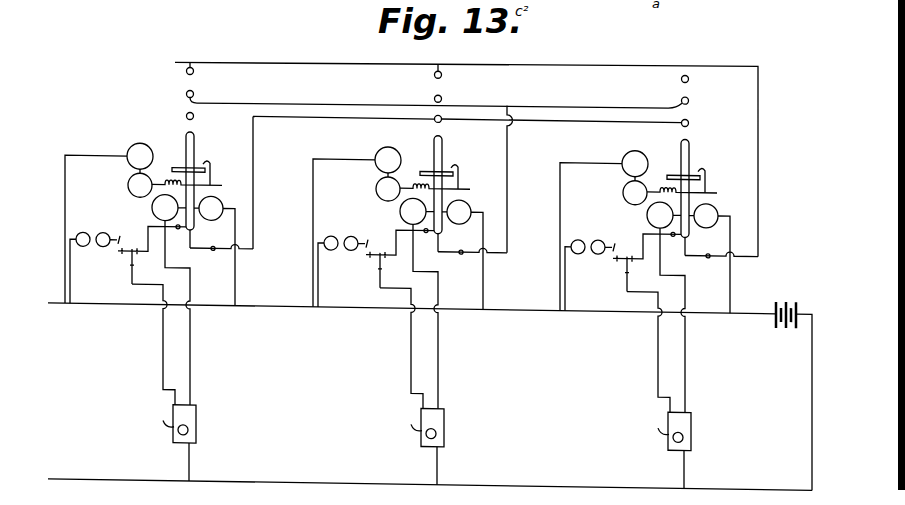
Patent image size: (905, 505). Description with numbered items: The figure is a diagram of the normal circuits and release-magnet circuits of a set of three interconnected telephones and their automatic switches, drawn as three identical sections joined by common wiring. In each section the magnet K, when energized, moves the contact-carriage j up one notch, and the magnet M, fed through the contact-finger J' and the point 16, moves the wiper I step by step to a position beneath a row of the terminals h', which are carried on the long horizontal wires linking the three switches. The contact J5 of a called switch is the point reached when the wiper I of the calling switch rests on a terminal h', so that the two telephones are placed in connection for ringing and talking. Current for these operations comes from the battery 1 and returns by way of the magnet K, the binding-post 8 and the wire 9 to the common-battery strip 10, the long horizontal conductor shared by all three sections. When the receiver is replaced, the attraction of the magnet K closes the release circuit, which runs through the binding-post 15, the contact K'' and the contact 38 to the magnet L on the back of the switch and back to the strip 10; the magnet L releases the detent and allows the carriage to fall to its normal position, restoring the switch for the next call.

The terminals h' is at (451, 99).
The wiper I is at (197, 144).
The contact-finger J' is at (452, 176).
The point 16 is at (444, 191).
The magnet M is at (387, 189).
The magnet K is at (435, 211).
The magnet L is at (89, 238).
The contact 38 is at (399, 241).
The release-circuit contact K'' is at (365, 271).
The binding-post 15 is at (151, 287).
The contact-carriage j is at (191, 240).
The switch contact J5 is at (212, 251).
The wire 9 is at (237, 288).
The binding-post 8 is at (191, 352).
The common-battery strip 10 is at (516, 316).
The battery 1 is at (786, 332).